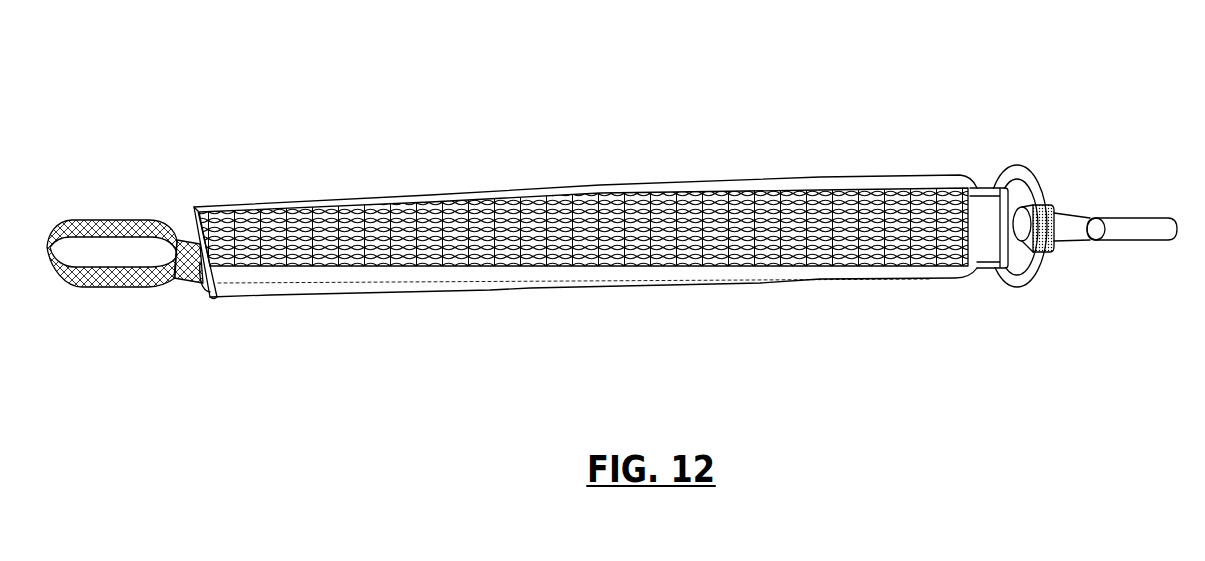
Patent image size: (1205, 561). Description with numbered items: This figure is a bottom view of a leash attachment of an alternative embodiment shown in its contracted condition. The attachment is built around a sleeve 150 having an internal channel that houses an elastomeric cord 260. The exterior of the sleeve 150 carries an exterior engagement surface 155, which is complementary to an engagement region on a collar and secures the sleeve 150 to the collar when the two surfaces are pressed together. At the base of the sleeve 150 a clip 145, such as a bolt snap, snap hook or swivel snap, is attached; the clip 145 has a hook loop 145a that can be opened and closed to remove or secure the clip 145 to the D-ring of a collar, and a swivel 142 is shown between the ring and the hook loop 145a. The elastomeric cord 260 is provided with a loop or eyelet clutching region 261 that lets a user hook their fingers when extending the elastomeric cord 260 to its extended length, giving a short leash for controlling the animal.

The swivel nut 142 is at (1030, 243).
The clip 145 is at (1008, 165).
The hook loop 145a is at (1107, 243).
The sleeve 150 is at (284, 278).
The exterior engagement surface 155 is at (512, 243).
The elastomeric cord 260 is at (208, 278).
The loop or eyelet clutching region 261 is at (137, 267).